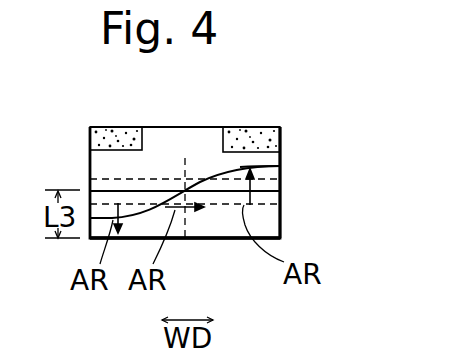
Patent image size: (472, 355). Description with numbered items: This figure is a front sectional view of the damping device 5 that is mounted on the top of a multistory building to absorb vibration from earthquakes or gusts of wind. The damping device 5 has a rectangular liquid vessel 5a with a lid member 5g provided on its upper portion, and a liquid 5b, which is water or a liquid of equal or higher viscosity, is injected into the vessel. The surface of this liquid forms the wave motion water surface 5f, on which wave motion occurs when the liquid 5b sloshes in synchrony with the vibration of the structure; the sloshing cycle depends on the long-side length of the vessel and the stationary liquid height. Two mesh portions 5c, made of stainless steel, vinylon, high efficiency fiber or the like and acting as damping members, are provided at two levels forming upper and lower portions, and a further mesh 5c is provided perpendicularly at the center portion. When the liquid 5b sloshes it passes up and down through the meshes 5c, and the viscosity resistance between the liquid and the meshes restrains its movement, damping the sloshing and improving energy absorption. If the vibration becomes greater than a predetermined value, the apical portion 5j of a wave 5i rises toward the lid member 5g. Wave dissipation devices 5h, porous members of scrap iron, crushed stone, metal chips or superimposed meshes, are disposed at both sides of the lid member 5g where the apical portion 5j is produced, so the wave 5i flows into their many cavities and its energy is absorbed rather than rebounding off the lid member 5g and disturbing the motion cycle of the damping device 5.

The damping device 5 is at (229, 252).
The liquid vessel 5a is at (283, 228).
The liquid 5b is at (283, 143).
The mesh portion 5c is at (110, 178).
The wave motion water surface 5f is at (283, 190).
The lid member 5g is at (152, 127).
The wave dissipation device 5h is at (110, 130).
The wave 5i is at (204, 180).
The apical portion of wave 5j is at (283, 156).